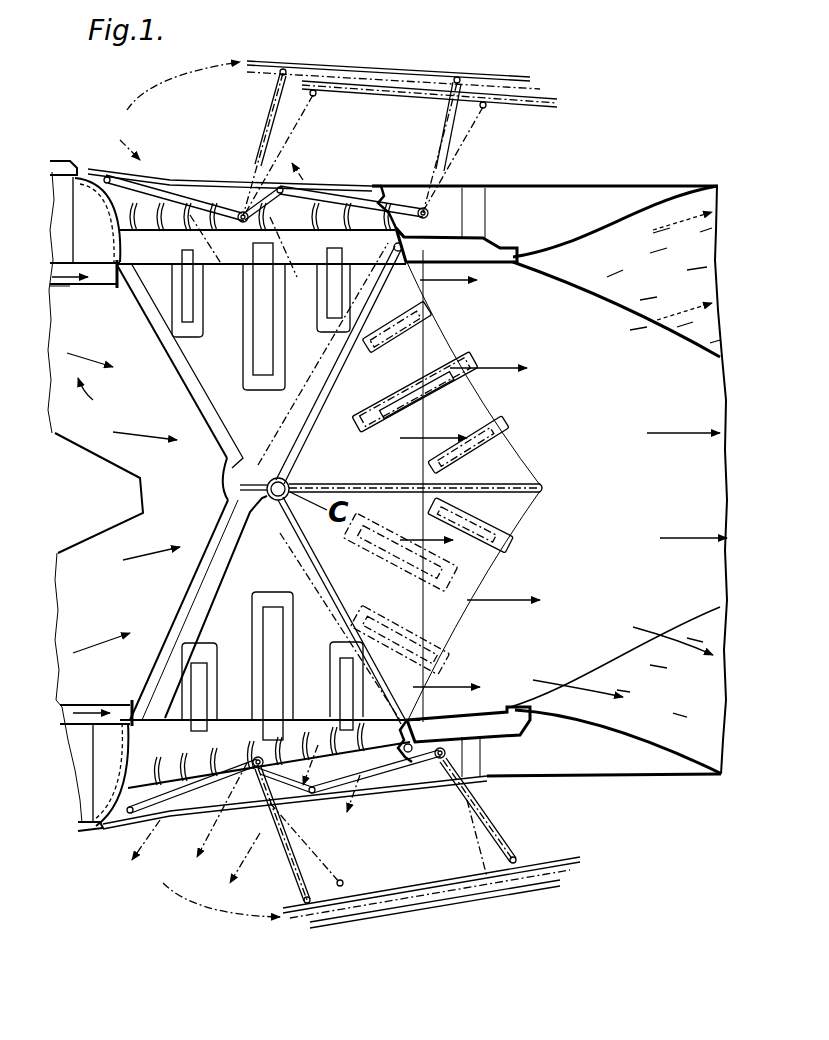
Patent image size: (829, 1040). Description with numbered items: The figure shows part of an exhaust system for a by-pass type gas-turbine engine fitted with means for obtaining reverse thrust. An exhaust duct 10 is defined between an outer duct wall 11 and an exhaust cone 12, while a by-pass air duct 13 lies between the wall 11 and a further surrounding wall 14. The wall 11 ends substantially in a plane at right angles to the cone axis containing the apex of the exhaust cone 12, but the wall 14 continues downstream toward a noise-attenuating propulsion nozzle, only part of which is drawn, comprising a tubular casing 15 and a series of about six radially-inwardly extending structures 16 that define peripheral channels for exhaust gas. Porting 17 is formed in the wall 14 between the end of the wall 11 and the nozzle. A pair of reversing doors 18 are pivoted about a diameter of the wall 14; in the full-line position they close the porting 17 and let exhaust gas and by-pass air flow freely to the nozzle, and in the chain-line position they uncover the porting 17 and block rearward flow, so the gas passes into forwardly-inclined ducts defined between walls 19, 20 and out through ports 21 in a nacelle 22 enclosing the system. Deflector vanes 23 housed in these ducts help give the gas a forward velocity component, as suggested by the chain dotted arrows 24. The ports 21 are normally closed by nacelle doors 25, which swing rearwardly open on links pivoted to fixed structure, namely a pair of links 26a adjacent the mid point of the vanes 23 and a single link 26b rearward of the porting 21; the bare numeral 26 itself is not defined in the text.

The exhaust duct 10 is at (114, 497).
The outer duct wall 11 is at (88, 288).
The exhaust cone 12 is at (96, 455).
The by-pass air duct 13 is at (53, 288).
The surrounding wall 14 is at (73, 167).
The tubular casing 15 is at (600, 230).
The radially-inwardly extending structures 16 is at (672, 340).
The porting 17 is at (137, 258).
The reversing doors 18 is at (217, 382).
The duct wall 19 is at (118, 258).
The duct wall 20 is at (392, 225).
The ports 21 is at (81, 166).
The nacelle 22 is at (488, 186).
The deflector vanes 23 is at (137, 212).
The chain dotted arrows 24 is at (198, 160).
The nacelle doors 25 is at (241, 177).
The lever 26 is at (212, 782).
The links 26a is at (165, 203).
The link 26b is at (330, 200).